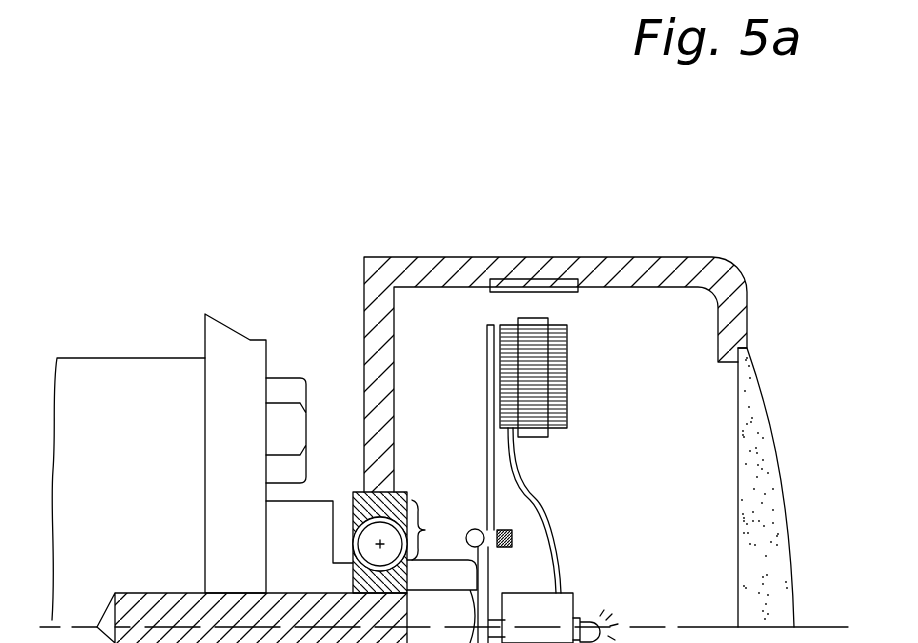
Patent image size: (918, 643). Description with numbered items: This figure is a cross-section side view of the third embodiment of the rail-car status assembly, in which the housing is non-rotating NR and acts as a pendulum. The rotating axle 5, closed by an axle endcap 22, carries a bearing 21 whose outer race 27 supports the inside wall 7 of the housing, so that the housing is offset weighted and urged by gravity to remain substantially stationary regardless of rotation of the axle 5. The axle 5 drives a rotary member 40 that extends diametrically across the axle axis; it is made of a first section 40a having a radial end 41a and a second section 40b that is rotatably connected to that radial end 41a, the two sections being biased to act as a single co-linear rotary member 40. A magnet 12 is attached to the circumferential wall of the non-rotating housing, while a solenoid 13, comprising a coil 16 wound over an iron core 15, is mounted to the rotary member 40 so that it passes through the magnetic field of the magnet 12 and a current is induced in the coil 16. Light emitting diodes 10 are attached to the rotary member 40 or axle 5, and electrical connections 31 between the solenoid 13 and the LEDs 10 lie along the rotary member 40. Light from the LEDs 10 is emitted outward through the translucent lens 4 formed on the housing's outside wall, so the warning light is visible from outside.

The non-rotating structure NR is at (435, 257).
The translucent lens 4 is at (783, 490).
The rotating axle 5 is at (85, 358).
The inside wall 7 is at (396, 366).
The light emitting diodes 10 is at (595, 614).
The magnet 12 is at (534, 285).
The solenoid 13 is at (568, 375).
The iron core 15 is at (545, 438).
The coil 16 is at (568, 345).
The roller bearing 21 is at (436, 530).
The axle endcap 22 is at (228, 338).
The outer race 27 is at (400, 492).
The electrical connections 31 is at (550, 586).
The rotary member 40 is at (532, 478).
The first section 40a is at (488, 562).
The second section 40b is at (538, 520).
The radial end 41a is at (483, 528).